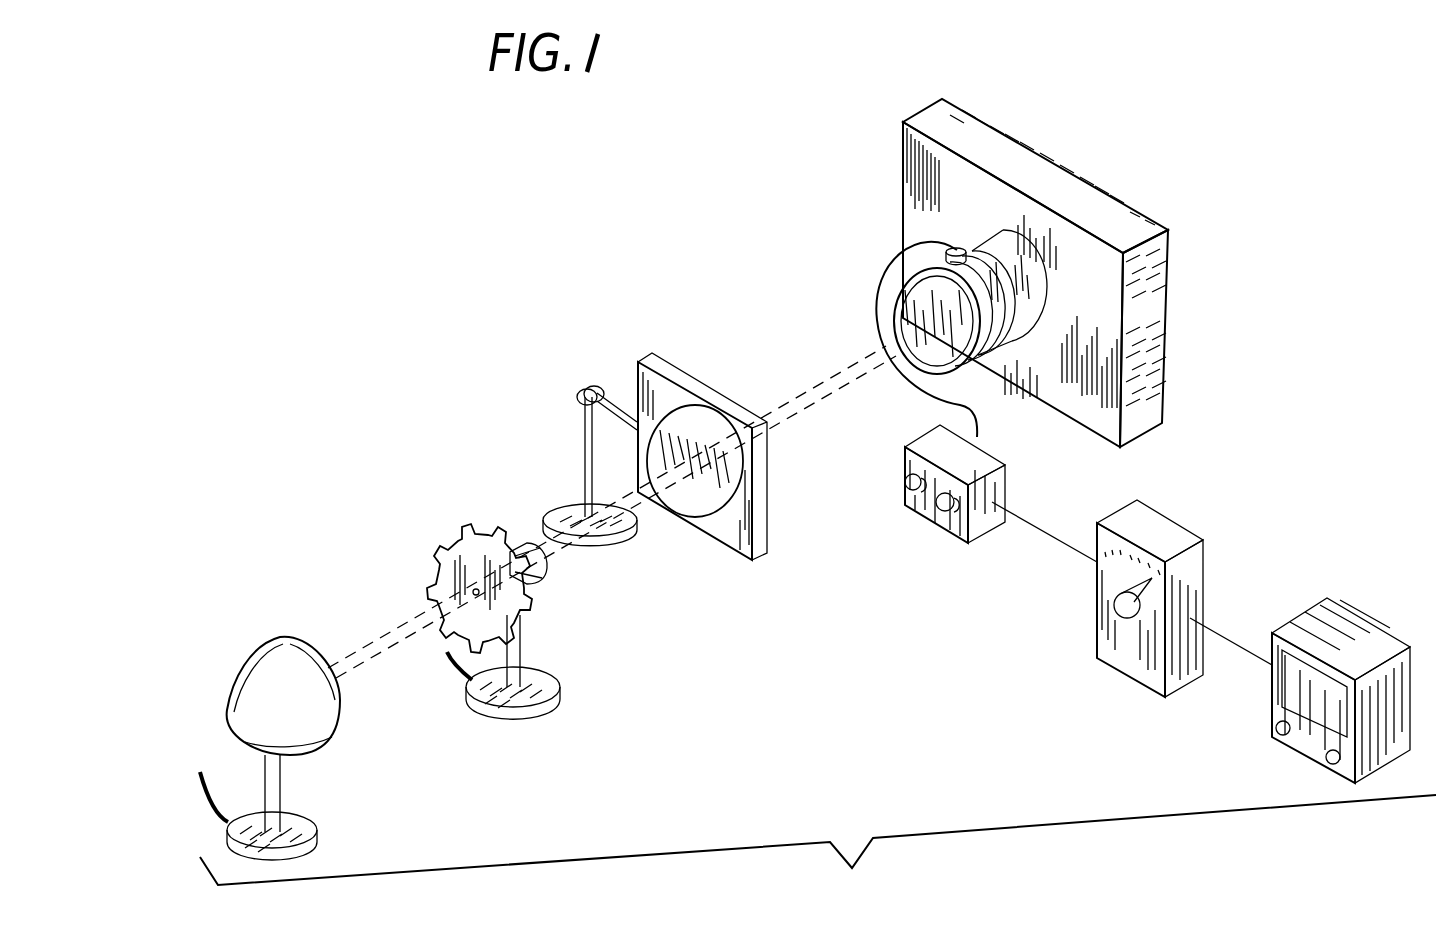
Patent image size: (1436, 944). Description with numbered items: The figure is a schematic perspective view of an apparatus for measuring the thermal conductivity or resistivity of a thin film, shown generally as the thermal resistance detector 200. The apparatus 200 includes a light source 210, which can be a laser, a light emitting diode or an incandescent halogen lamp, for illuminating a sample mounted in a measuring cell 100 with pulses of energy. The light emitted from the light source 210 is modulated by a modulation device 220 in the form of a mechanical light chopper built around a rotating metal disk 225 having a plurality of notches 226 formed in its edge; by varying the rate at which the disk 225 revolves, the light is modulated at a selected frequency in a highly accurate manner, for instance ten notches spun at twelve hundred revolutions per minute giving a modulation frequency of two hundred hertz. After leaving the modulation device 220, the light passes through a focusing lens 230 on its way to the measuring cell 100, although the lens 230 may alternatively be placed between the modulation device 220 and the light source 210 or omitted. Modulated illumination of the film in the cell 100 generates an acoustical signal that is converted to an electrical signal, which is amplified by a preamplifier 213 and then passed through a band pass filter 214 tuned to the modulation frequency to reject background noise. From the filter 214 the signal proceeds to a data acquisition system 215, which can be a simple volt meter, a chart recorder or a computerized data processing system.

The measuring cell 100 is at (1097, 158).
The thermal resistance detector 200 is at (438, 336).
The light source 210 is at (253, 657).
The preamplifier 213 is at (915, 510).
The band pass filter 214 is at (1192, 568).
The data acquisition system 215 is at (1340, 604).
The modulation device 220 is at (523, 655).
The rotating metal disk 225 is at (442, 617).
The notches 226 is at (430, 578).
The focusing lens 230 is at (690, 418).